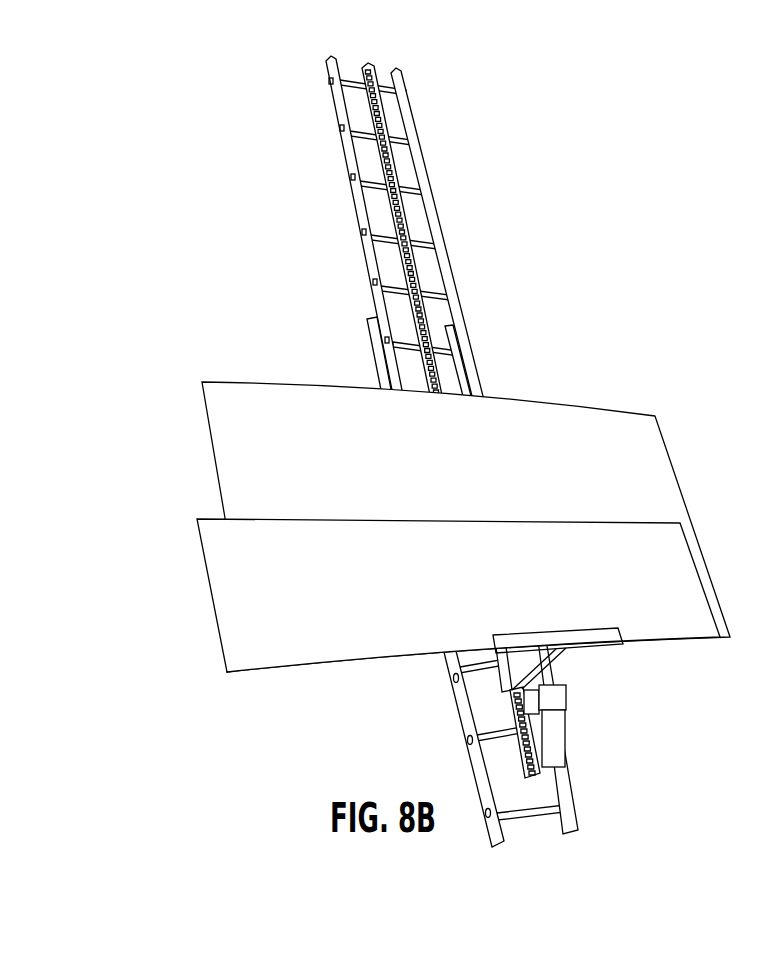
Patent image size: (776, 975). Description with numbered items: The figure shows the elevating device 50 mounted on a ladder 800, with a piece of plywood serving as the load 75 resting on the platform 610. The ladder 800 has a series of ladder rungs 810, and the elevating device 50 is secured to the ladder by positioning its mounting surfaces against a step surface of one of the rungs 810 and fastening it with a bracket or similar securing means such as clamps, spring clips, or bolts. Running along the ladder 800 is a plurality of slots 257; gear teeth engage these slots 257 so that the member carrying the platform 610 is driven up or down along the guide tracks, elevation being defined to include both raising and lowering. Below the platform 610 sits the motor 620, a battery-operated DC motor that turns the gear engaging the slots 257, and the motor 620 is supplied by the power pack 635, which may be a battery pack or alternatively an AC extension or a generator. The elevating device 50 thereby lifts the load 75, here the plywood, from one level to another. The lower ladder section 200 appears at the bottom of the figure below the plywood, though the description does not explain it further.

The elevating device 50 is at (405, 90).
The ladder 800 is at (430, 161).
The ladder rung 810 is at (455, 347).
The slots 257 is at (370, 86).
The load 75 is at (577, 474).
The platform 610 is at (598, 638).
The power pack 635 is at (566, 695).
The motor 620 is at (562, 745).
The lower ladder section 200 is at (528, 752).